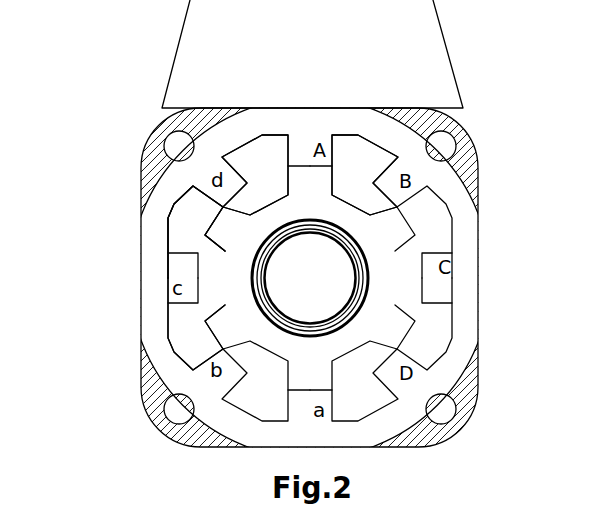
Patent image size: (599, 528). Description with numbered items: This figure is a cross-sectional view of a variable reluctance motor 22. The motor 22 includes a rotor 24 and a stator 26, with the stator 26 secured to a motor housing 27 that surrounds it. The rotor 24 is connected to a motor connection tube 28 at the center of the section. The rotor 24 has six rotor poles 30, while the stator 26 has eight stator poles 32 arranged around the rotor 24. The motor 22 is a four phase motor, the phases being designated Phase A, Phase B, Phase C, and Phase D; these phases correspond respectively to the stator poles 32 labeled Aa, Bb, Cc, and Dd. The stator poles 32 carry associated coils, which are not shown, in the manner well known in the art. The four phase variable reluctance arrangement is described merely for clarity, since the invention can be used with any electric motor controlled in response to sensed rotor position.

The motor 22 is at (122, 72).
The rotor 24 is at (395, 251).
The stator 26 is at (177, 202).
The motor housing 27 is at (473, 157).
The motor connection tube 28 is at (292, 322).
The rotor poles 30 is at (203, 232).
The stator poles 32 is at (338, 152).